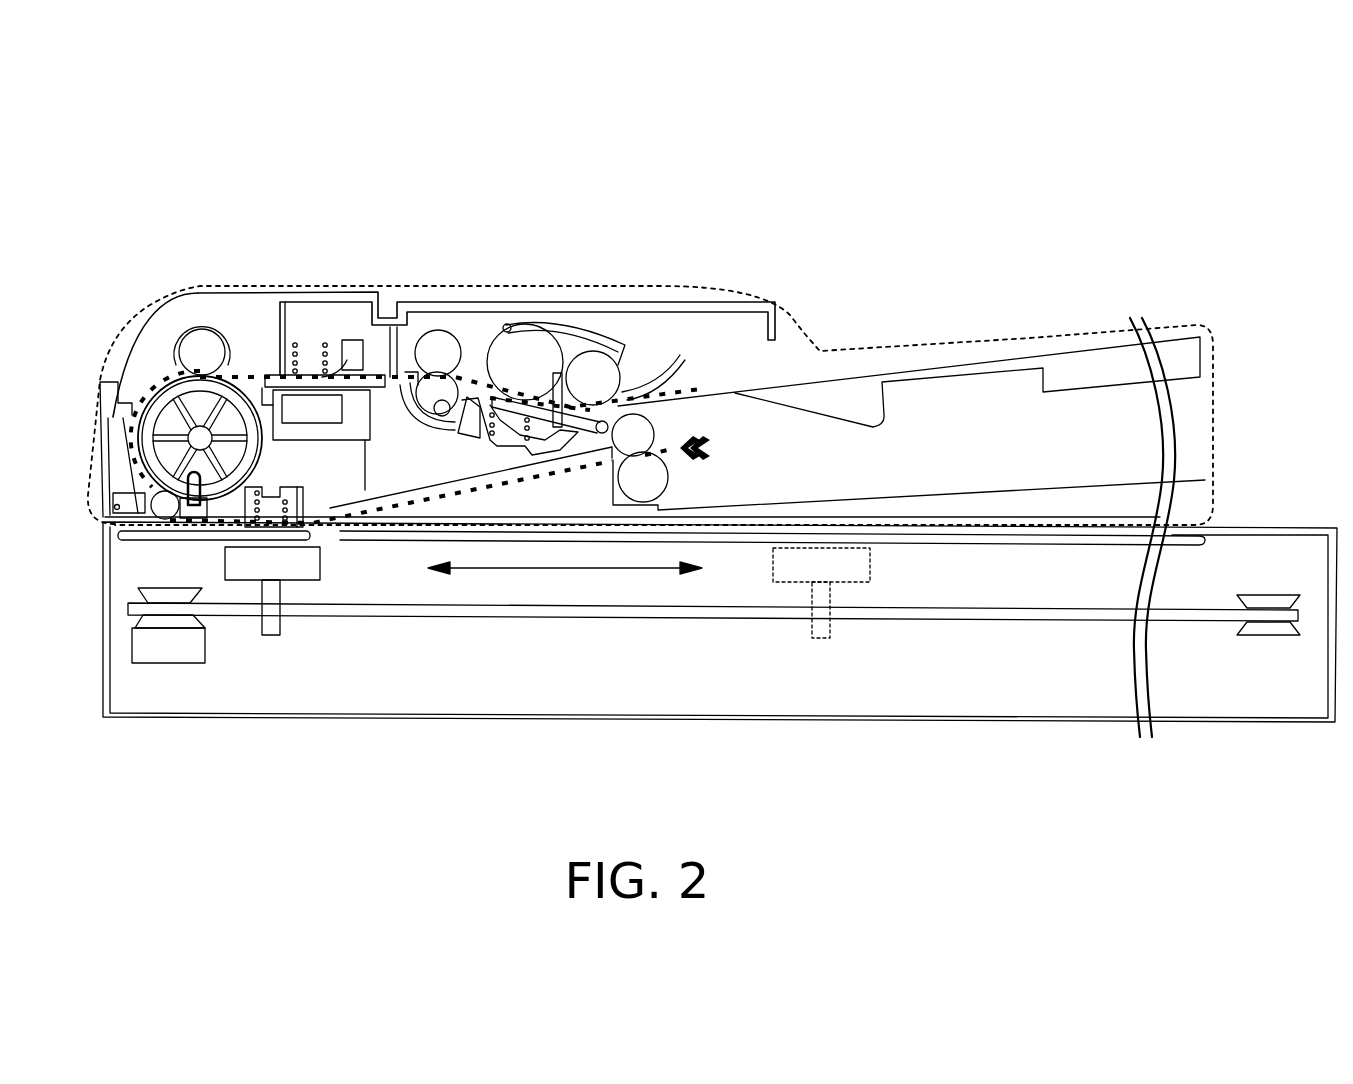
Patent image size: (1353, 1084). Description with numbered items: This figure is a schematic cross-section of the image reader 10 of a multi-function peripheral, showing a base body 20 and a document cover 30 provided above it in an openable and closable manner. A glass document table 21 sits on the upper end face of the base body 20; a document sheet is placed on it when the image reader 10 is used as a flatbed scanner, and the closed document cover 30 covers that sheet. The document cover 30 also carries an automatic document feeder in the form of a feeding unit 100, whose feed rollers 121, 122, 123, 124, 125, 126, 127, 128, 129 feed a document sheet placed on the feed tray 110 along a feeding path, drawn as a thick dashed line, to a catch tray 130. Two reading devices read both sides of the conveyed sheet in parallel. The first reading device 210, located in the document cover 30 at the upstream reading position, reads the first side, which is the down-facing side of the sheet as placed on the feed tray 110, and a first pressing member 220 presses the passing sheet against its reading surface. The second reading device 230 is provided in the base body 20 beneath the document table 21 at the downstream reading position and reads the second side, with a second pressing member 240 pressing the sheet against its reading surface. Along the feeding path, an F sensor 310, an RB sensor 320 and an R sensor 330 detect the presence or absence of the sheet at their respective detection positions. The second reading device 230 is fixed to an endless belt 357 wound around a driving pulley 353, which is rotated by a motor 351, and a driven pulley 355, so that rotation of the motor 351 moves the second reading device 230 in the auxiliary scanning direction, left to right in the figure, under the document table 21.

The image reader 10 is at (172, 222).
The base body 20 is at (315, 695).
The document table 21 is at (968, 540).
The document cover 30 is at (673, 287).
The feeding unit 100 is at (475, 336).
The feed tray 110 is at (797, 387).
The feed roller 121 is at (605, 352).
The feed roller 122 is at (523, 347).
The feed roller 123 is at (440, 385).
The feed roller 124 is at (427, 350).
The feed roller 125 is at (190, 350).
The feed roller 126 is at (158, 410).
The feed roller 127 is at (167, 503).
The feed roller 128 is at (650, 425).
The feed roller 129 is at (655, 485).
The catch tray 130 is at (972, 498).
The first reading device 210 is at (270, 385).
The first pressing member 220 is at (323, 362).
The second reading device 230 is at (322, 555).
The second pressing member 240 is at (253, 483).
The F sensor 310 is at (560, 390).
The RB sensor 320 is at (390, 376).
The R sensor 330 is at (192, 507).
The motor 351 is at (162, 648).
The driving pulley 353 is at (192, 622).
The driven pulley 355 is at (1268, 627).
The endless belt 357 is at (522, 614).